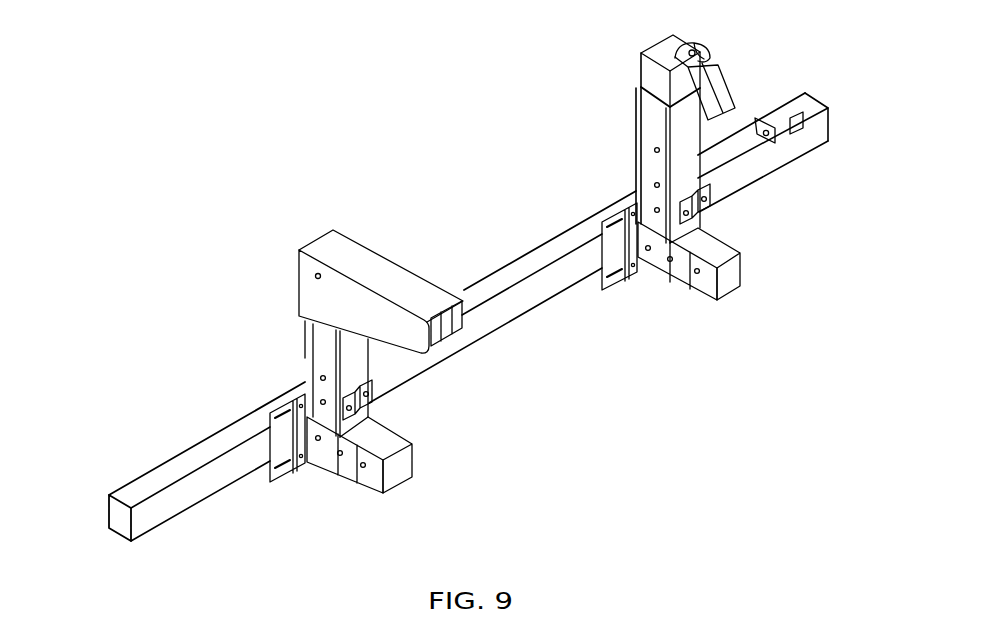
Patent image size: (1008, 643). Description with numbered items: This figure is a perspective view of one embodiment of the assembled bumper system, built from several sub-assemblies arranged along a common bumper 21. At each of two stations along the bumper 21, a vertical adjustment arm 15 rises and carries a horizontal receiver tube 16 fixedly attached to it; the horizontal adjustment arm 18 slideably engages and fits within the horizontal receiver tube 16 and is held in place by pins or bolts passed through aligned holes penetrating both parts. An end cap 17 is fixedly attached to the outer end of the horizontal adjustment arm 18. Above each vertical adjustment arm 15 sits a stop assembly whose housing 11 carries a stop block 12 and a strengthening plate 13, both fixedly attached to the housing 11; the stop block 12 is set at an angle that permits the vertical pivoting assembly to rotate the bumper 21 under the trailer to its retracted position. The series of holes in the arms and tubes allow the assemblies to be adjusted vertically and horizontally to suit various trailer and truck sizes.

The housing 11 is at (357, 260).
The stop block 12 is at (728, 90).
The strengthening plate 13 is at (705, 62).
The vertical adjustment arm 15 is at (312, 383).
The horizontal receiver tube 16 is at (337, 463).
The end cap 17 is at (400, 473).
The horizontal adjustment arm 18 is at (390, 445).
The bumper 21 is at (498, 320).